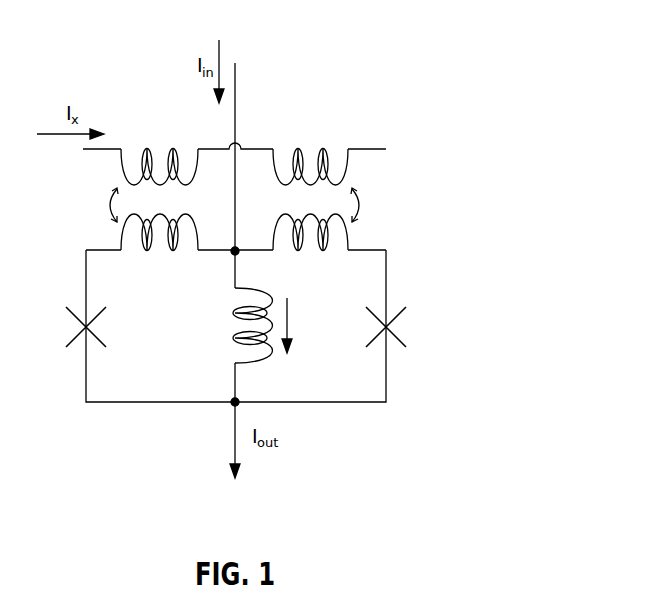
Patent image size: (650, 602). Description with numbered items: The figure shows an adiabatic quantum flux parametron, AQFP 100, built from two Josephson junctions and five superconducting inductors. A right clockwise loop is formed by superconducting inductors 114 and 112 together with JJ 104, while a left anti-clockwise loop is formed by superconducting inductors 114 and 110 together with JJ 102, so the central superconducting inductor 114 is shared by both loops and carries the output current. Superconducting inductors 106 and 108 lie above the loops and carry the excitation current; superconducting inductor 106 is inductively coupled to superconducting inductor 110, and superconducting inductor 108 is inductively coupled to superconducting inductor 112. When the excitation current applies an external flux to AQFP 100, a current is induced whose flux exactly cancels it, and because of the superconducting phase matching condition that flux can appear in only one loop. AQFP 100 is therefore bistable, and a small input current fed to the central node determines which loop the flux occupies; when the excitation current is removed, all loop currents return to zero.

The AQFP 100 is at (531, 122).
The JJ 102 is at (60, 330).
The JJ 104 is at (414, 327).
The superconducting inductor 106 is at (159, 152).
The superconducting inductor 108 is at (310, 151).
The superconducting inductor 110 is at (159, 248).
The superconducting inductor 112 is at (310, 248).
The superconducting inductor 114 is at (233, 325).